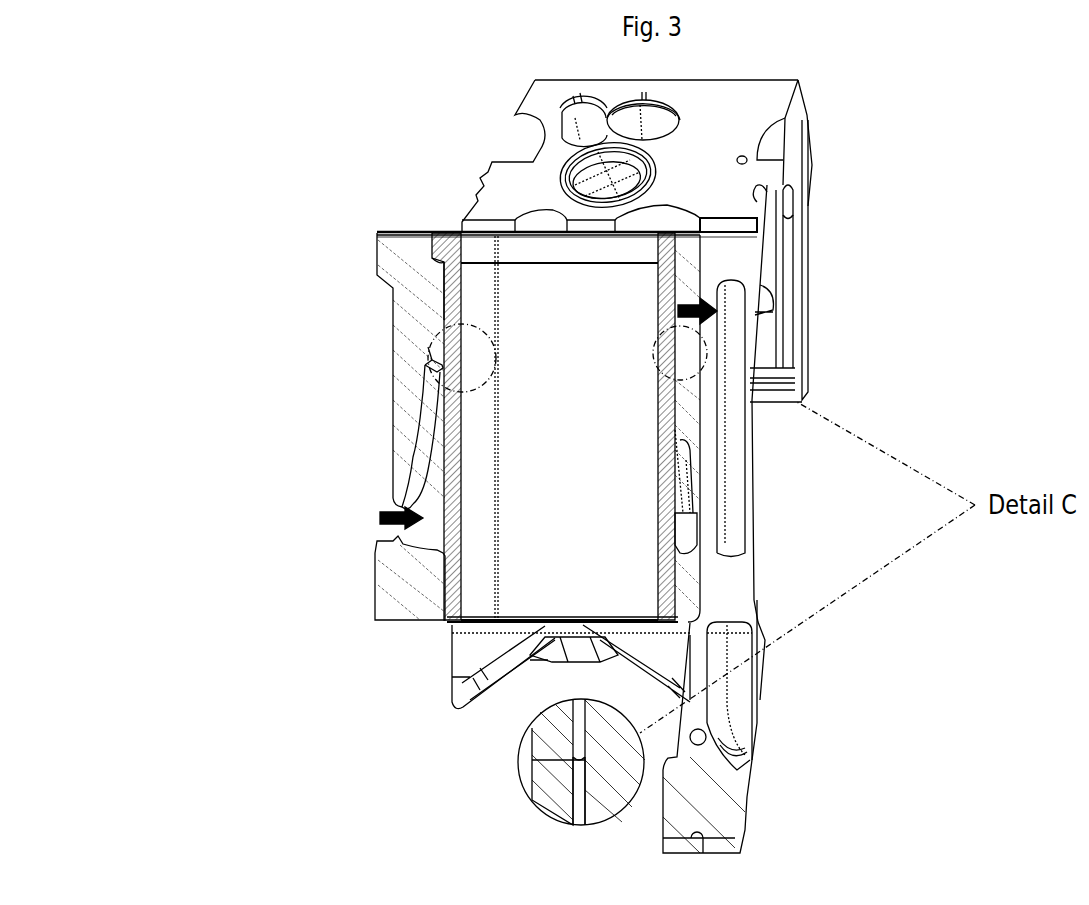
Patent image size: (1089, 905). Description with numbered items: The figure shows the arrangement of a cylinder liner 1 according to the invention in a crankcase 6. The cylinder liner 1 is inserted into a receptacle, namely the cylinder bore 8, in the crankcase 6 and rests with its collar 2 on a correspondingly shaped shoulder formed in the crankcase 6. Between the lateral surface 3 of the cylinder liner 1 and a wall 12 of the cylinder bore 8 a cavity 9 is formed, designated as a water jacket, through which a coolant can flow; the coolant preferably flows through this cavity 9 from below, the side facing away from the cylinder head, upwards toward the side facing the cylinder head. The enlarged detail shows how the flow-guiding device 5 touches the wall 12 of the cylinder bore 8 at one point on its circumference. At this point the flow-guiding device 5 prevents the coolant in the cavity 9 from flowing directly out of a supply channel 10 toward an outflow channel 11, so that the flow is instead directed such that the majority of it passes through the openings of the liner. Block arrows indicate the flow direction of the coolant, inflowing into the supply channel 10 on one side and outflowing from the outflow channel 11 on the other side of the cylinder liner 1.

The cylinder liner 1 is at (437, 426).
The collar 2 is at (380, 240).
The lateral surface 3 is at (440, 532).
The flow-guiding device 5 is at (532, 762).
The crankcase 6 is at (430, 367).
The cylinder bore 8 is at (445, 318).
The cavity 9 is at (735, 283).
The supply channel 10 is at (370, 506).
The outflow channel 11 is at (730, 315).
The wall 12 is at (445, 318).